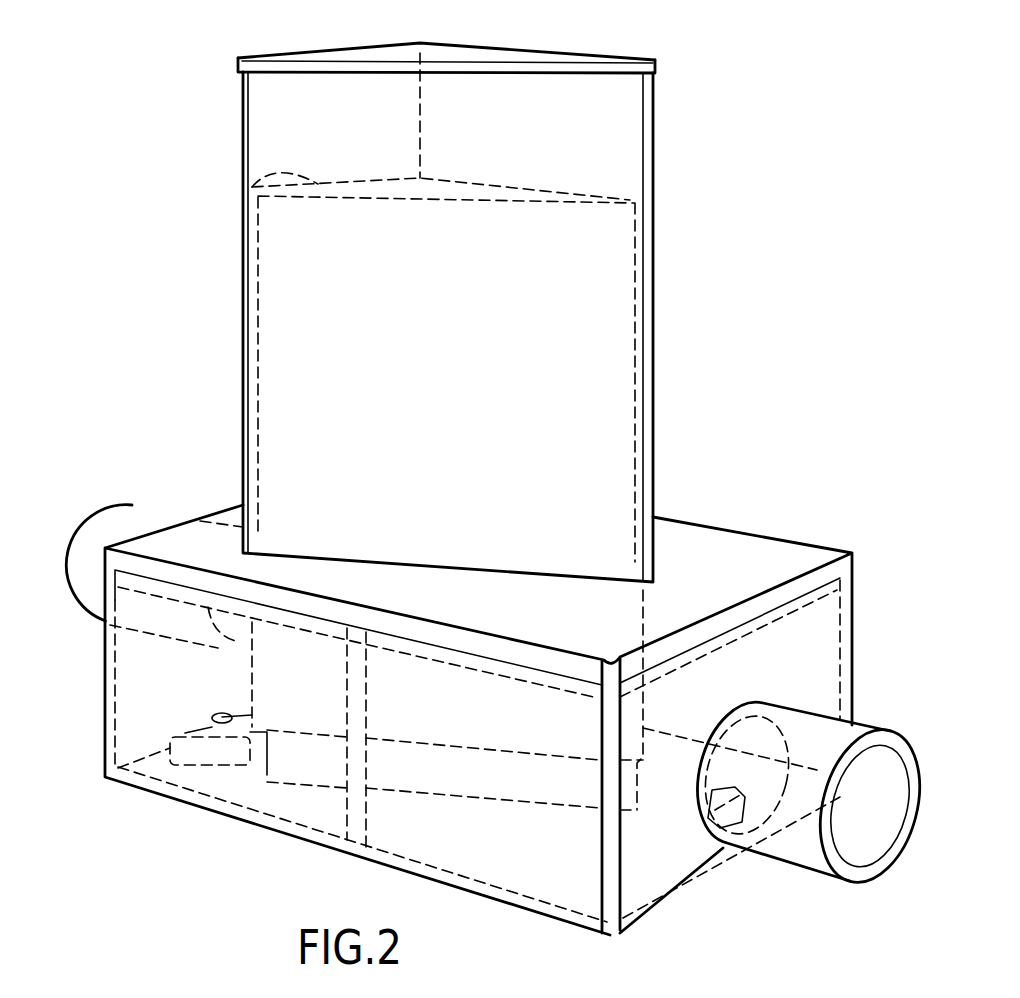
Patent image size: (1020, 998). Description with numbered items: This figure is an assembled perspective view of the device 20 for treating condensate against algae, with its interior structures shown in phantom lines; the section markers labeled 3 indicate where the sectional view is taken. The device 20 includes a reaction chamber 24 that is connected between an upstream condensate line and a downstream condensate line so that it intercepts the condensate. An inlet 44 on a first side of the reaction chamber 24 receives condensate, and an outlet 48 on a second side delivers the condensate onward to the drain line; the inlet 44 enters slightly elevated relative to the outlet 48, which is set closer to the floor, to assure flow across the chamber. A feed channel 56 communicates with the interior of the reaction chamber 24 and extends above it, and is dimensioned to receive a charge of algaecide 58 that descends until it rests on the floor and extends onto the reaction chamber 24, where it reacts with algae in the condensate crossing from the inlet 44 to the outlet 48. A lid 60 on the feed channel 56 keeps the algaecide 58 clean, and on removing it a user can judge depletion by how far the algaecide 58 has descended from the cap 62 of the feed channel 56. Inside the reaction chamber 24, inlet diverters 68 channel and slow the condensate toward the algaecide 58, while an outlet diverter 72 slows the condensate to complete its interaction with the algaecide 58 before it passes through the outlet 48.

The device 20 is at (760, 386).
The reaction chamber 24 is at (180, 819).
The inlet 44 is at (138, 518).
The outlet 48 is at (788, 846).
The feed channel 56 is at (453, 402).
The algaecide 58 is at (250, 188).
The lid 60 is at (315, 50).
The cap of feed channel 62 is at (285, 77).
The diverters 68 is at (214, 712).
The outlet diverter 72 is at (707, 802).
The section line 3- 3 is at (43, 570).